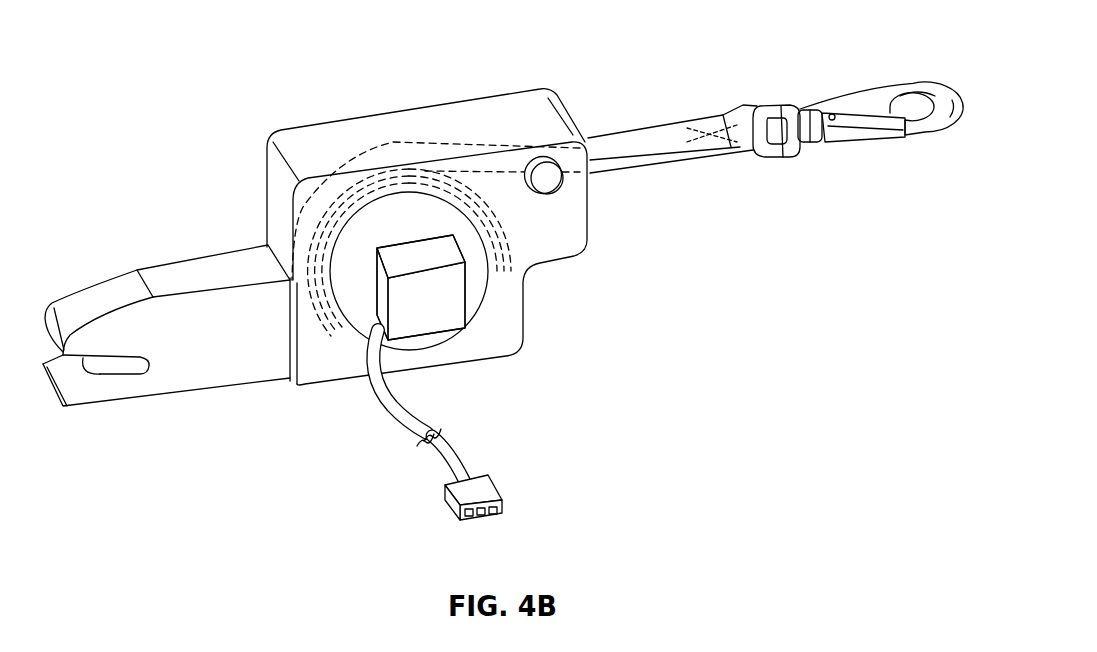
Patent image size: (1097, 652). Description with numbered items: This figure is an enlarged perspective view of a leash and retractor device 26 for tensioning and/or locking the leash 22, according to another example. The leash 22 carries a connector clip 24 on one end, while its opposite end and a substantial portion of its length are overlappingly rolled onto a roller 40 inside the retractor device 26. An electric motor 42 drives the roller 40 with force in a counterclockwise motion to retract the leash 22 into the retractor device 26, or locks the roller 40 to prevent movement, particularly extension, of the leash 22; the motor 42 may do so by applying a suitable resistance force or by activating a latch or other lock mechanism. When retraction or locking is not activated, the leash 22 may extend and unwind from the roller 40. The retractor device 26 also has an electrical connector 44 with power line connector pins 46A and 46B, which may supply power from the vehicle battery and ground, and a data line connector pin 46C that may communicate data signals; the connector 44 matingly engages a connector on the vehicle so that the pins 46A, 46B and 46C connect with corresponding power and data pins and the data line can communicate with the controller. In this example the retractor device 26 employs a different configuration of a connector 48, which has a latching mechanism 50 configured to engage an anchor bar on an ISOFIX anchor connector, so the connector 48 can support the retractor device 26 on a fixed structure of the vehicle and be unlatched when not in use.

The leash 22 is at (662, 137).
The connector clip 24 is at (897, 80).
The retractor device 26 is at (325, 123).
The roller 40 is at (338, 333).
The electric motor 42 is at (447, 294).
The electrical connector 44 is at (482, 488).
The power line connector pin 46A is at (463, 520).
The power line connector pin 46B is at (483, 517).
The data line connector pin 46C is at (503, 513).
The connector 48 is at (186, 273).
The latching mechanism 50 is at (122, 368).